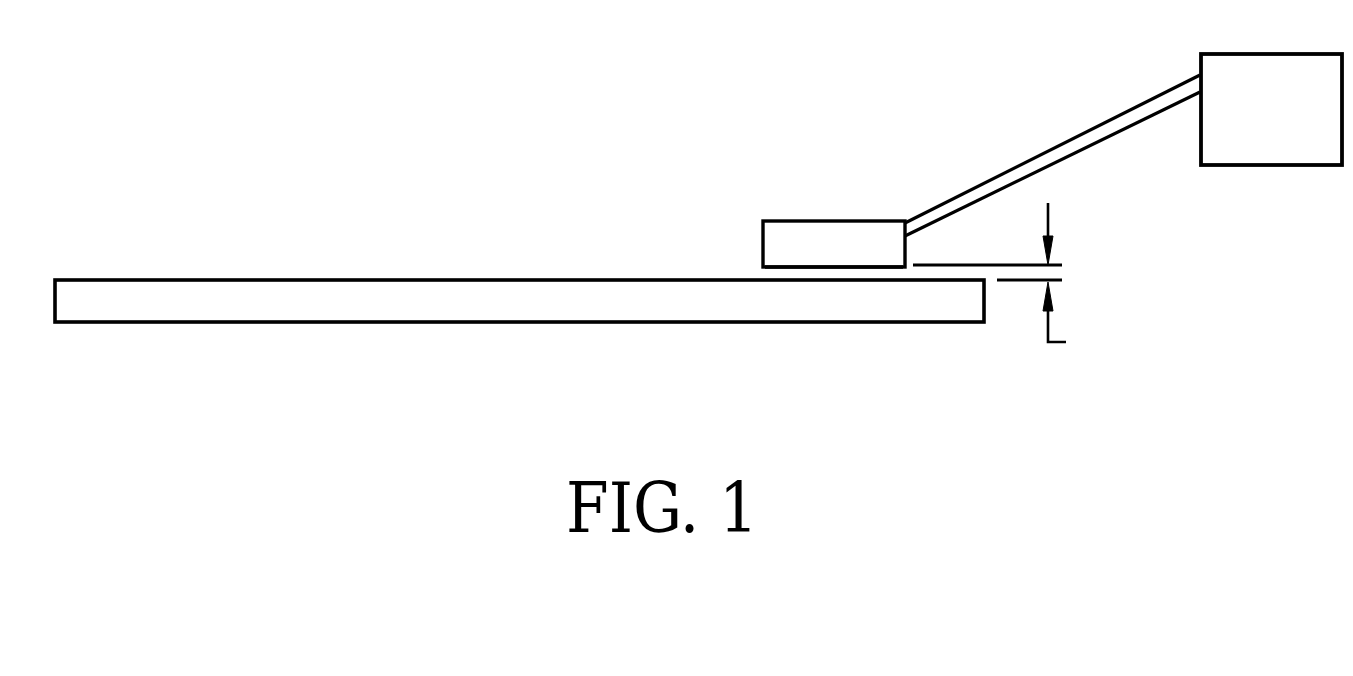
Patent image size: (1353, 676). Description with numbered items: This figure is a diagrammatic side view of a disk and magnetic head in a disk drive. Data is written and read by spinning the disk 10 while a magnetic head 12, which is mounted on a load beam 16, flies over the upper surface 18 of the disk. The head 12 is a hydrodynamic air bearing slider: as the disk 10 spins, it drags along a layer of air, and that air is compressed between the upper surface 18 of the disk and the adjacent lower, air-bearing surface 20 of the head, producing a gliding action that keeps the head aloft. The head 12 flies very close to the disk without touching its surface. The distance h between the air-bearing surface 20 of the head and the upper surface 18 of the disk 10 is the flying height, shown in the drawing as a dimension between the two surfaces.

The disk 10 is at (337, 220).
The magnetic head 12 is at (798, 220).
The load beam 16 is at (1025, 160).
The upper surface of the disk 18 is at (535, 279).
The air-bearing surface 20 is at (810, 268).
The flying height h is at (1004, 280).